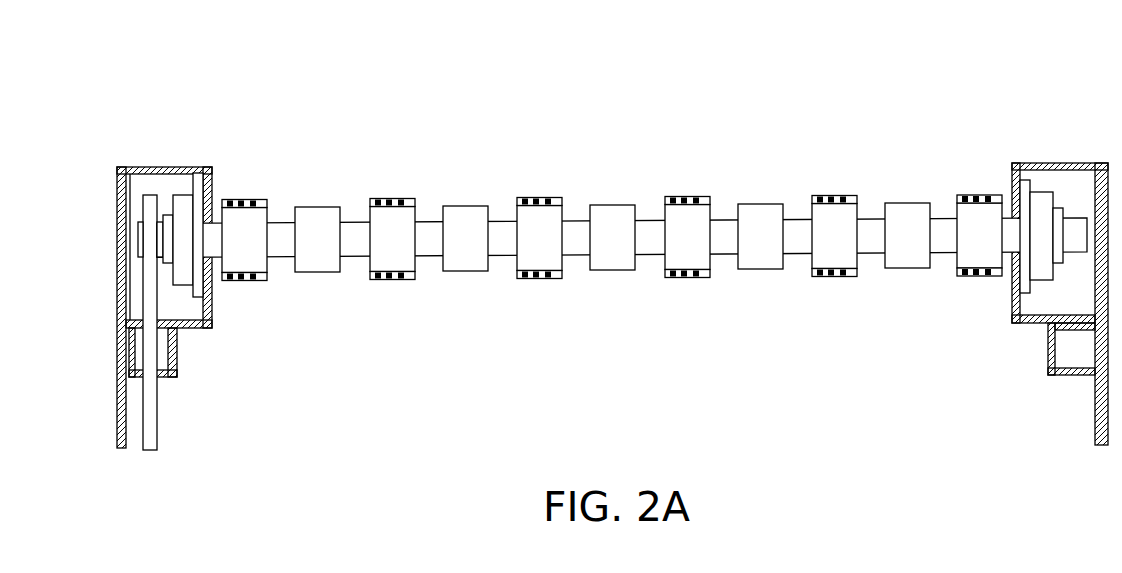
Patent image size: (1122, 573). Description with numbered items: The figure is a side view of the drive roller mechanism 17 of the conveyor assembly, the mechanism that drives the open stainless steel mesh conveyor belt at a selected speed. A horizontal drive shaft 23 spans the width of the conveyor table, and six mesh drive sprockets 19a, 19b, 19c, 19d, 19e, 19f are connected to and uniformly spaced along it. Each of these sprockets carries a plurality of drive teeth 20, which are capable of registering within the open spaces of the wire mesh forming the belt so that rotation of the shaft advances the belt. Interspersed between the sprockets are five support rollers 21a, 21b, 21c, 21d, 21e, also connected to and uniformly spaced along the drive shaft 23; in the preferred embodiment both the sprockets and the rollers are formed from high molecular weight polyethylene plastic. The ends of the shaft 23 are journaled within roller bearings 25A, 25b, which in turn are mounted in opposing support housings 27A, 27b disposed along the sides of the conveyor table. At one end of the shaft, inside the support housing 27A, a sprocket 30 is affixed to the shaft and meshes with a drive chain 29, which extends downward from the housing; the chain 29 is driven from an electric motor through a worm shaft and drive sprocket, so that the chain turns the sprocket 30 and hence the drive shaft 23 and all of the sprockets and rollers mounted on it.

The drive roller mechanism 17 is at (140, 98).
The support housing 27A is at (154, 172).
The roller bearing 25A is at (198, 198).
The sprocket 30 is at (140, 247).
The drive chain 29 is at (150, 432).
The drive teeth 20 is at (237, 200).
The mesh drive sprocket 19a is at (241, 263).
The mesh drive sprocket 19b is at (388, 262).
The mesh drive sprocket 19c is at (535, 262).
The mesh drive sprocket 19d is at (682, 261).
The mesh drive sprocket 19e is at (830, 260).
The mesh drive sprocket 19f is at (975, 258).
The drive shaft 23 is at (284, 246).
The support roller 21a is at (319, 222).
The support roller 21b is at (462, 222).
The support roller 21c is at (605, 222).
The support roller 21d is at (750, 221).
The support roller 21e is at (897, 221).
The roller bearing 25b is at (1038, 203).
The support housing 27b is at (1068, 163).